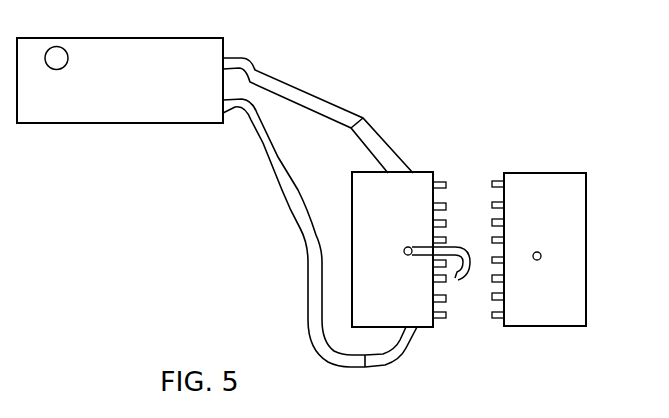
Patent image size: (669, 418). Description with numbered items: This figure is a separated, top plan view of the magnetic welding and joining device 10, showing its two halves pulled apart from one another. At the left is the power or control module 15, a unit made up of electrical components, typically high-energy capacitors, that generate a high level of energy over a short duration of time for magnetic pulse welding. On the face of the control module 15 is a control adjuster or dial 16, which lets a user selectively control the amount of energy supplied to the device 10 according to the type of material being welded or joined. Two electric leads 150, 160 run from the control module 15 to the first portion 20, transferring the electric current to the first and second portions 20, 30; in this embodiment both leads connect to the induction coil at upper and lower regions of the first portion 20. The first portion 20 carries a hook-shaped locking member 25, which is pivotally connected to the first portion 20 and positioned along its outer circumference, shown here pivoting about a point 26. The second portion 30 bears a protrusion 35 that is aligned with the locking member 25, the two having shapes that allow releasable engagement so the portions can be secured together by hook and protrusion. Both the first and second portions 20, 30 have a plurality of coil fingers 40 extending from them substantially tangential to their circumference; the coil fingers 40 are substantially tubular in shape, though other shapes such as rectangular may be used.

The magnetic welding and joining device 10 is at (579, 143).
The control module 15 is at (88, 98).
The control adjuster 16 is at (62, 53).
The first portion 20 is at (375, 203).
The locking member 25 is at (472, 273).
The pivot 26 is at (410, 247).
The second portion 30 is at (573, 210).
The protrusion 35 is at (541, 257).
The coil fingers 40 is at (444, 183).
The electric lead 150 is at (407, 343).
The electric lead 160 is at (372, 138).